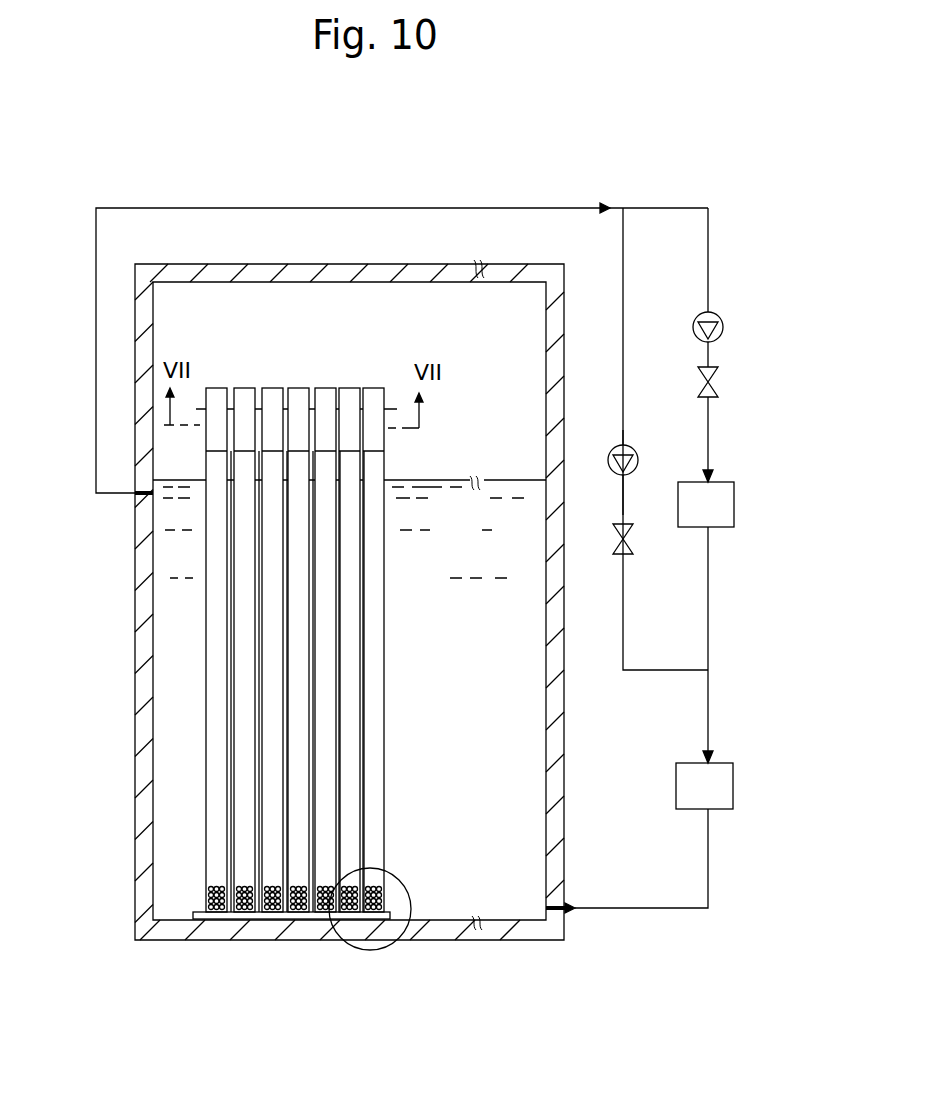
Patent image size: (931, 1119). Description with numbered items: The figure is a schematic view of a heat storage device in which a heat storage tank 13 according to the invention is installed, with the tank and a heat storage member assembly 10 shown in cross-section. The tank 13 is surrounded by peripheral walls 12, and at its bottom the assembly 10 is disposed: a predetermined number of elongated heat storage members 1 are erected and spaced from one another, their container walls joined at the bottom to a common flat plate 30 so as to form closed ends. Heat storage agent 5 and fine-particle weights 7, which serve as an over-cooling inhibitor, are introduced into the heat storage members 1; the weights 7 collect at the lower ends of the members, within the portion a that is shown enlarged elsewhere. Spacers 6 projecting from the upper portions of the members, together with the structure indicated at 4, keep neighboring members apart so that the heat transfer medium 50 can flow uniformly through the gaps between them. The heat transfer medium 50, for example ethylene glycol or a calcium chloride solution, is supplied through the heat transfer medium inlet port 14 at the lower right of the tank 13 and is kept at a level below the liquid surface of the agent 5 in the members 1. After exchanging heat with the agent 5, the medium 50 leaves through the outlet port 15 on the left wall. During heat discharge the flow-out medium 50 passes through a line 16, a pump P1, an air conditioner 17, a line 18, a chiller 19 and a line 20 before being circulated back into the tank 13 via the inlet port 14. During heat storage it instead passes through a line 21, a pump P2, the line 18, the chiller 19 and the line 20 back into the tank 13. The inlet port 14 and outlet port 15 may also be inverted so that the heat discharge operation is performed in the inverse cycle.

The heat storage member 1 is at (383, 640).
The inlet header 4 is at (221, 390).
The heat storage agent 5 is at (353, 559).
The spacer 6 is at (387, 408).
The weights 7 is at (220, 880).
The heat storage member assembly 10 is at (310, 608).
The peripheral walls 12 is at (322, 578).
The heat storage tank 13 is at (372, 265).
The heat transfer medium inlet port 14 is at (566, 906).
The outlet port 15 is at (134, 497).
The line 16 is at (536, 208).
The air conditioner 17 is at (734, 503).
The line 18 is at (708, 688).
The chiller 19 is at (734, 783).
The line 20 is at (652, 912).
The line 21 is at (658, 439).
The flat plate 30 is at (195, 912).
The heat transfer medium 50 is at (494, 710).
The portion a is at (411, 886).
The pump P1 is at (724, 287).
The pump P2 is at (638, 472).